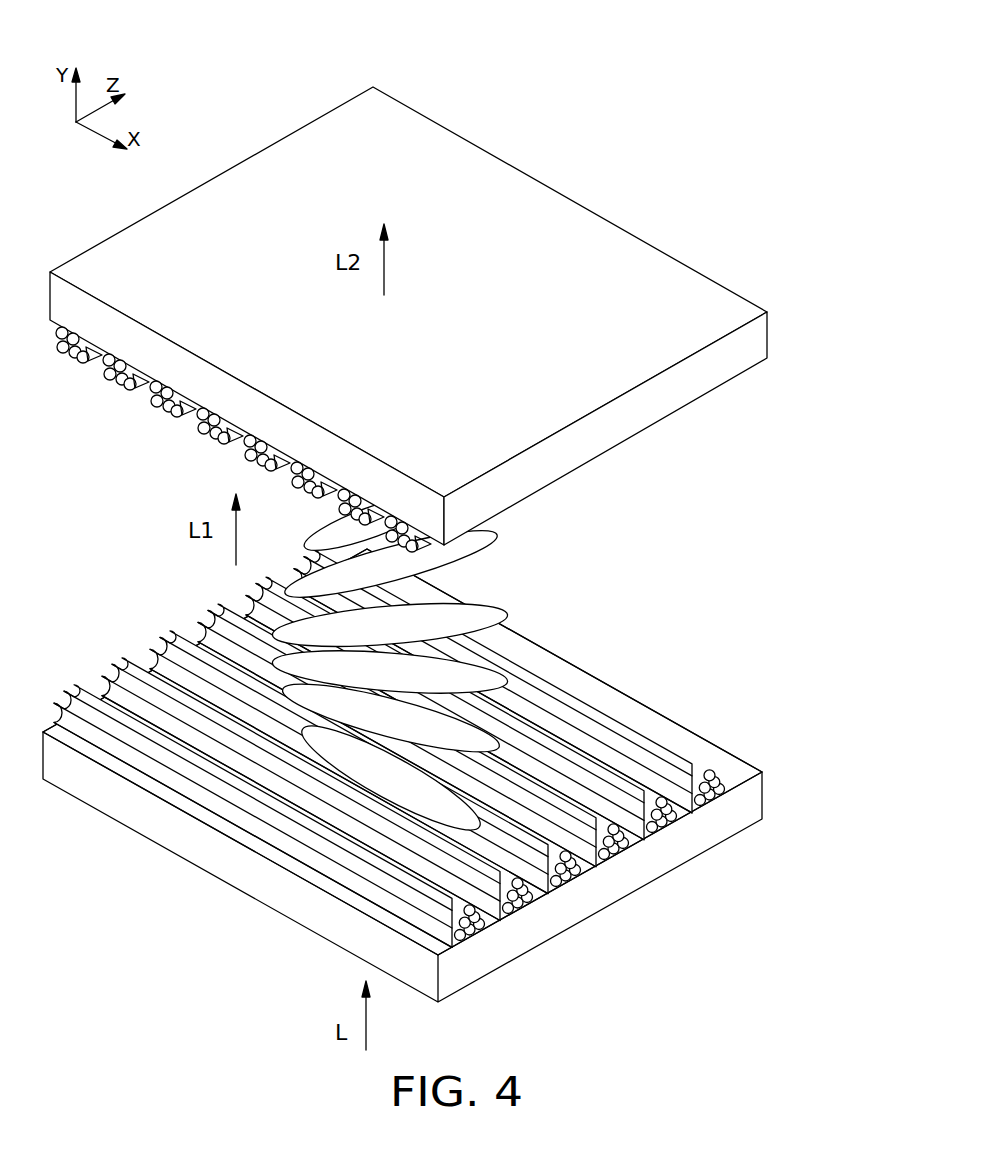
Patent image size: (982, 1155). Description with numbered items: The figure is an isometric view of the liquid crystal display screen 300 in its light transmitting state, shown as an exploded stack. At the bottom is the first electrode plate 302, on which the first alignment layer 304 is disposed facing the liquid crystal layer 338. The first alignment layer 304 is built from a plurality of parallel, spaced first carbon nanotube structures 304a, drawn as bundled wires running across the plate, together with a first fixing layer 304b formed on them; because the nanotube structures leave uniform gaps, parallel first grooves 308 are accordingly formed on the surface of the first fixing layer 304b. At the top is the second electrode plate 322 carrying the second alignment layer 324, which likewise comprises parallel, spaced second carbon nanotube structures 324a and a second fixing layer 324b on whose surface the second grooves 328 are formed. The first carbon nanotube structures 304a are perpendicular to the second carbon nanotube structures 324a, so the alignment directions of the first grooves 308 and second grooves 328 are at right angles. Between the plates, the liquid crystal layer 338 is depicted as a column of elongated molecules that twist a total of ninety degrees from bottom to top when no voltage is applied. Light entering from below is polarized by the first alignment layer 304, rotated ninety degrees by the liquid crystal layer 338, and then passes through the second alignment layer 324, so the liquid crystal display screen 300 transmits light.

The liquid crystal display screen 300 is at (452, 58).
The first electrode plate 302 is at (583, 912).
The first alignment layer 304 is at (793, 866).
The first carbon nanotube structures 304a is at (675, 820).
The first fixing layer 304b is at (727, 793).
The first grooves 308 is at (585, 697).
The second electrode plate 322 is at (648, 413).
The second alignment layer 324 is at (80, 413).
The second carbon nanotube structures 324a is at (212, 432).
The second fixing layer 324b is at (163, 408).
The second grooves 328 is at (122, 385).
The liquid crystal layer 338 is at (473, 540).